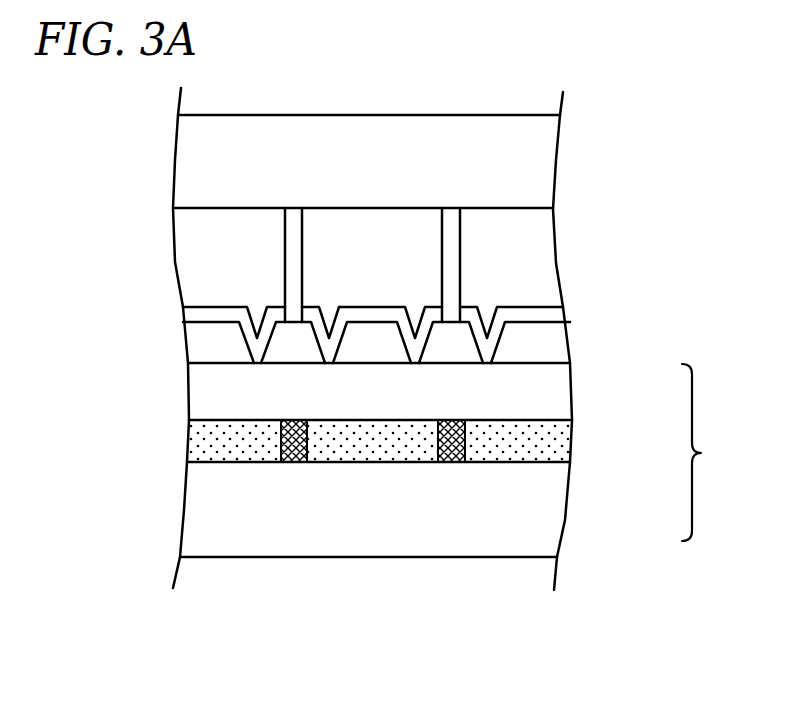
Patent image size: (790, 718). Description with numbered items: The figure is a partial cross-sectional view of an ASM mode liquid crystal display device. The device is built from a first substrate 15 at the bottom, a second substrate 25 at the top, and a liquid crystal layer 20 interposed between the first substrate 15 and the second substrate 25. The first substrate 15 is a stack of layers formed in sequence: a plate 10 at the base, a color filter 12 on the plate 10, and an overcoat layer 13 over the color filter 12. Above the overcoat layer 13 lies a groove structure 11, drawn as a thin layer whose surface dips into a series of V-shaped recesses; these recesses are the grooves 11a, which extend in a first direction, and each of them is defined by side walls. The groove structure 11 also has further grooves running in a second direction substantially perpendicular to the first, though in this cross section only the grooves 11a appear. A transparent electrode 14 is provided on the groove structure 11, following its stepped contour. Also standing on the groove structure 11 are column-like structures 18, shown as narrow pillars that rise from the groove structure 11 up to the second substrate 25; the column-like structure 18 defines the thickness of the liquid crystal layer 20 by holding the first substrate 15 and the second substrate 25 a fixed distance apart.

The plate 10 is at (548, 525).
The groove structure 11 is at (558, 347).
The grooves 11a is at (328, 330).
The color filter 12 is at (560, 442).
The overcoat layer 13 is at (560, 395).
The transparent electrode 14 is at (373, 305).
The first substrate 15 is at (707, 452).
The column-like structure 18 is at (288, 262).
The liquid crystal layer 20 is at (548, 267).
The second substrate 25 is at (543, 170).